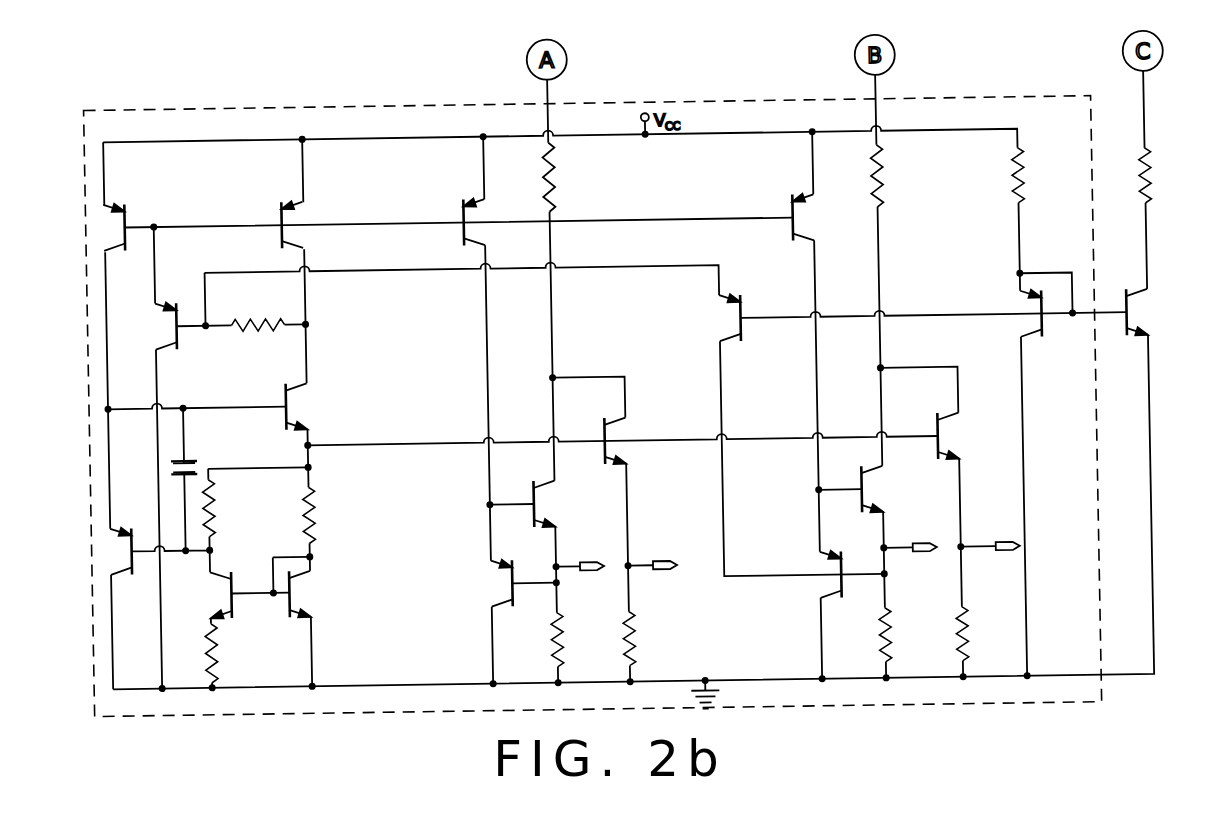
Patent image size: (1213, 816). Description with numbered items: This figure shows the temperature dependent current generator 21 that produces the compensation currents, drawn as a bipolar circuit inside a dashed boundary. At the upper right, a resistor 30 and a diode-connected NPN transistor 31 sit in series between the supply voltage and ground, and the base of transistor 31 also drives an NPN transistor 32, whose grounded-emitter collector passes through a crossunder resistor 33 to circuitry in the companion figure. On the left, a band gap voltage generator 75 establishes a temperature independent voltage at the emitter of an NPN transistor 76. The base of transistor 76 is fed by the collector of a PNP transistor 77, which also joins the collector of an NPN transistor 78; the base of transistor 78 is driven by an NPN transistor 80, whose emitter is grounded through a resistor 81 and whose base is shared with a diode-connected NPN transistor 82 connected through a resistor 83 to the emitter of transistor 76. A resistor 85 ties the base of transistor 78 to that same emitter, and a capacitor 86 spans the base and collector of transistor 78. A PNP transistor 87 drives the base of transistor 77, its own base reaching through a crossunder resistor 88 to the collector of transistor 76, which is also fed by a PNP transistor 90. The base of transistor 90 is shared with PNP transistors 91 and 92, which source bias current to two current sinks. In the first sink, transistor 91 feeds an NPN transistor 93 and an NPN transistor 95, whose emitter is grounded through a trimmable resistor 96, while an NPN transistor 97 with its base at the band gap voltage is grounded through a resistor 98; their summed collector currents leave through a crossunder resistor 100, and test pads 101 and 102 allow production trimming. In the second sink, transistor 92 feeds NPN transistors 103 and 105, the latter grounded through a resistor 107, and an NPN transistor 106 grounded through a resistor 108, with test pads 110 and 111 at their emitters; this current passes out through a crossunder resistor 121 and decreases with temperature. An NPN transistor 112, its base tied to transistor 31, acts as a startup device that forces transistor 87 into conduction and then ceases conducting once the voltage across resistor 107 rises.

The temperature dependent current generator 21 is at (700, 99).
The resistor 30 is at (1016, 176).
The NPN transistor 31 is at (1040, 306).
The NPN transistor 32 is at (1137, 318).
The crossunder resistor 33 is at (1156, 190).
The band gap voltage generator 75 is at (336, 351).
The NPN transistor 76 is at (297, 385).
The PNP transistor 77 is at (130, 212).
The NPN transistor 78 is at (135, 551).
The NPN transistor 80 is at (239, 582).
The resistor 81 is at (214, 642).
The NPN transistor 82 is at (297, 573).
The resistor 83 is at (318, 529).
The resistor 85 is at (215, 504).
The capacitor 86 is at (190, 454).
The PNP transistor 87 is at (177, 312).
The crossunder resistor 88 is at (273, 325).
The PNP transistor 90 is at (285, 213).
The PNP transistor 91 is at (466, 210).
The PNP transistor 92 is at (796, 210).
The NPN transistor 93 is at (509, 571).
The NPN transistor 95 is at (537, 482).
The resistor 96 is at (561, 623).
The NPN transistor 97 is at (616, 428).
The resistor 98 is at (636, 644).
The crossunder resistor 100 is at (556, 181).
The test pad 101 is at (589, 560).
The test pad 102 is at (664, 563).
The NPN transistor 103 is at (837, 556).
The NPN transistor 105 is at (860, 504).
The NPN transistor 106 is at (942, 427).
The resistor 107 is at (886, 614).
The resistor 108 is at (961, 638).
The test pad 110 is at (910, 558).
The test pad 111 is at (997, 548).
The NPN transistor 112 is at (738, 305).
The crossunder resistor 121 is at (884, 187).